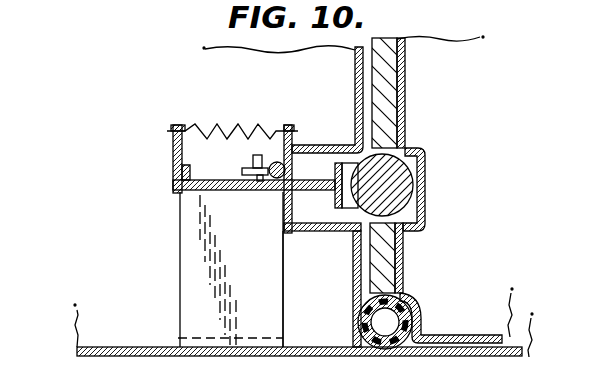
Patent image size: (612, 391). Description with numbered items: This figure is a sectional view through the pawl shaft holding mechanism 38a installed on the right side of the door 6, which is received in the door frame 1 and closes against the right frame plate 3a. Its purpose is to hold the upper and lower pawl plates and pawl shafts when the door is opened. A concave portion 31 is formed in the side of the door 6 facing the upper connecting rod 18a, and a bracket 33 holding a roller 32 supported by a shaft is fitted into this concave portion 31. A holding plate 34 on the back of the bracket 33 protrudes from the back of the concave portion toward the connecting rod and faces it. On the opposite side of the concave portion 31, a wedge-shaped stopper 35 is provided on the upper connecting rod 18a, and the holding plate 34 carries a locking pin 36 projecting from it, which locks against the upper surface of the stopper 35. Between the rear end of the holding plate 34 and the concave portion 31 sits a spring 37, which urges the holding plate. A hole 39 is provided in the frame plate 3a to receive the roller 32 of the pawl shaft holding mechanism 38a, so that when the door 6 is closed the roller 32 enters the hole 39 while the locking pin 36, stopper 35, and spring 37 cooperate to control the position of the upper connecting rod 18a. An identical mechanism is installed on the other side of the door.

The door frame 1 is at (472, 333).
The right frame plate 3a is at (388, 68).
The door 6 is at (310, 343).
The upper connecting rod 18a is at (276, 162).
The concave portion 31 is at (316, 146).
The roller 32 is at (406, 181).
The bracket 33 is at (331, 210).
The holding plate 34 is at (285, 205).
The wedge-shaped stopper 35 is at (243, 169).
The locking pin 36 is at (257, 154).
The spring 37 is at (198, 130).
The pawl shaft holding mechanism 38a is at (143, 163).
The hole 39 is at (400, 243).